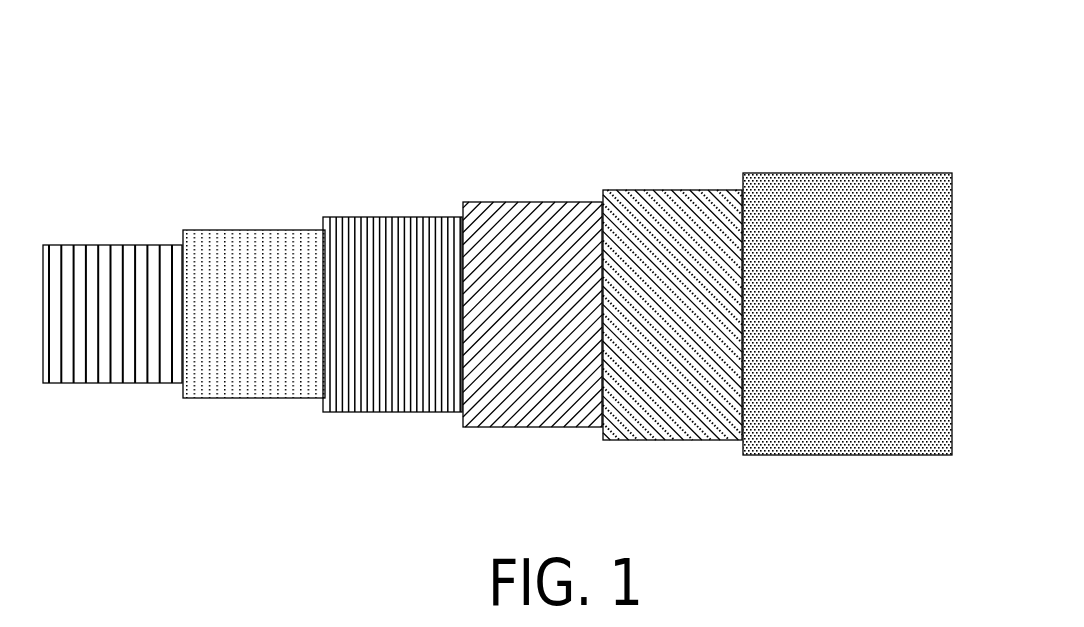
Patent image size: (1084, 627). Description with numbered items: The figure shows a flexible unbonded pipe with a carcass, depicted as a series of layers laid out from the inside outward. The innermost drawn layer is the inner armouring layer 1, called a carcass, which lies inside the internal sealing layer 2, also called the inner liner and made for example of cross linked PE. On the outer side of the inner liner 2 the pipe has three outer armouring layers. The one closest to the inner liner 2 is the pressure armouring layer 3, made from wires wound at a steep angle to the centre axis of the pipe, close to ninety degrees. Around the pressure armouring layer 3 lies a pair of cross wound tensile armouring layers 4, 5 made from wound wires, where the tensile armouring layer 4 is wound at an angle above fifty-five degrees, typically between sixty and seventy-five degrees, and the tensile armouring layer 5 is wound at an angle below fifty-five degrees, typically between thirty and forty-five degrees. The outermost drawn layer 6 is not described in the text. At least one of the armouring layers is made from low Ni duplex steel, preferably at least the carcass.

The inner armouring layer 1 is at (107, 247).
The internal sealing layer 2 is at (232, 241).
The pressure armouring layer 3 is at (385, 234).
The tensile armouring layer 4 is at (524, 216).
The tensile armouring layer 5 is at (665, 207).
The sixth layer 6 is at (804, 192).